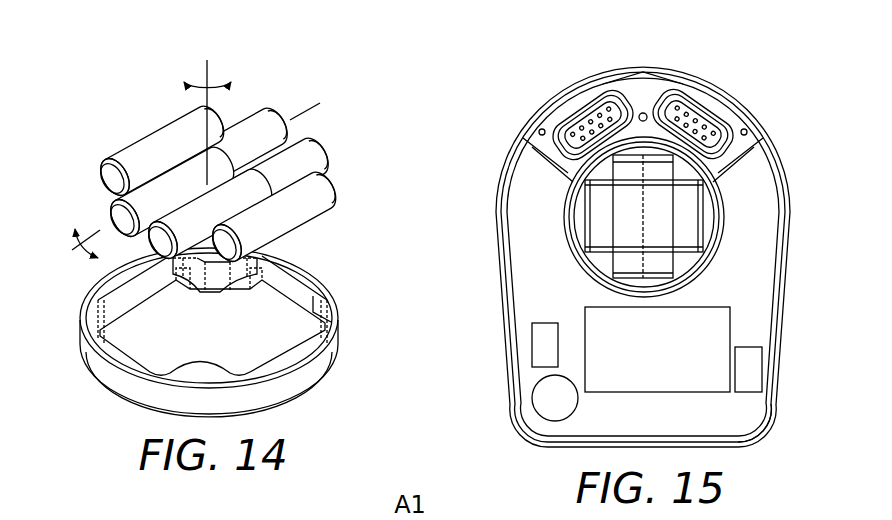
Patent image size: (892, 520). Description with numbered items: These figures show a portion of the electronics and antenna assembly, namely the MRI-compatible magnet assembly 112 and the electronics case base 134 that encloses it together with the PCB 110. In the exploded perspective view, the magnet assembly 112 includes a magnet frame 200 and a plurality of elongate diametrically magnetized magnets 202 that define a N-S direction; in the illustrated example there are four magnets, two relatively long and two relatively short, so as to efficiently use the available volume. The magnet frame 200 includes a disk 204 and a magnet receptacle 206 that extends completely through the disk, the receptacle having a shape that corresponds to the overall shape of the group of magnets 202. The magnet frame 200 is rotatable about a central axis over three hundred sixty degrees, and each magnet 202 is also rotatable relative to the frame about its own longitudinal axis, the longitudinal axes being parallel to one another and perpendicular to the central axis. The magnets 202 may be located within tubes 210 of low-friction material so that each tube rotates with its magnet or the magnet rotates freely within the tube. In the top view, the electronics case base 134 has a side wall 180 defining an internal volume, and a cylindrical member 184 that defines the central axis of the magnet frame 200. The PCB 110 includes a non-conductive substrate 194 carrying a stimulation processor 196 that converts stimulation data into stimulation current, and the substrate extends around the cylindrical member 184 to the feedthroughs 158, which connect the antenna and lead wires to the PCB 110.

In FIG. 14, the magnet assembly 112 is at (188, 136).
In FIG. 15, the magnet assembly 112 is at (694, 217).
In FIG. 14, the tube 210 is at (122, 156).
In FIG. 14, the elongate diametrically magnetized magnet 202 is at (113, 183).
In FIG. 15, the elongate diametrically magnetized magnet 202 is at (687, 255).
In FIG. 14, the magnet frame 200 is at (218, 332).
In FIG. 15, the magnet frame 200 is at (577, 217).
In FIG. 14, the disk 204 is at (315, 303).
In FIG. 14, the magnet receptacle 206 is at (190, 334).
In FIG. 15, the electronics case base 134 is at (602, 68).
In FIG. 15, the feedthrough 158 is at (697, 118).
In FIG. 15, the side wall 180 is at (496, 203).
In FIG. 15, the cylindrical member 184 is at (720, 228).
In FIG. 15, the stimulation processor 196 is at (713, 338).
In FIG. 15, the PCB 110 is at (694, 367).
In FIG. 15, the non-conductive substrate 194 is at (740, 407).